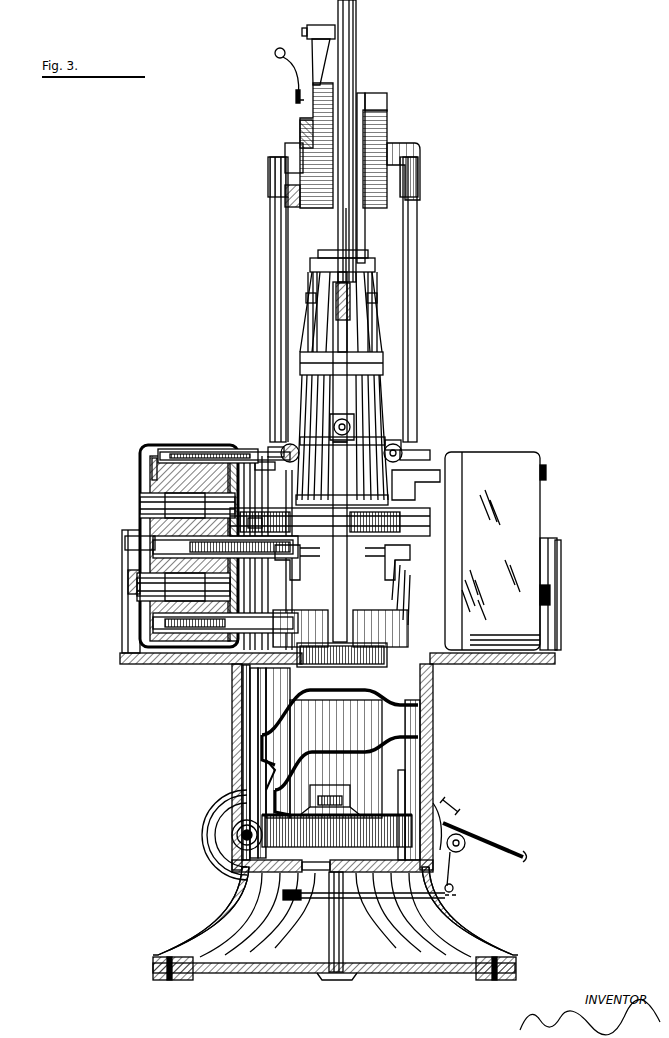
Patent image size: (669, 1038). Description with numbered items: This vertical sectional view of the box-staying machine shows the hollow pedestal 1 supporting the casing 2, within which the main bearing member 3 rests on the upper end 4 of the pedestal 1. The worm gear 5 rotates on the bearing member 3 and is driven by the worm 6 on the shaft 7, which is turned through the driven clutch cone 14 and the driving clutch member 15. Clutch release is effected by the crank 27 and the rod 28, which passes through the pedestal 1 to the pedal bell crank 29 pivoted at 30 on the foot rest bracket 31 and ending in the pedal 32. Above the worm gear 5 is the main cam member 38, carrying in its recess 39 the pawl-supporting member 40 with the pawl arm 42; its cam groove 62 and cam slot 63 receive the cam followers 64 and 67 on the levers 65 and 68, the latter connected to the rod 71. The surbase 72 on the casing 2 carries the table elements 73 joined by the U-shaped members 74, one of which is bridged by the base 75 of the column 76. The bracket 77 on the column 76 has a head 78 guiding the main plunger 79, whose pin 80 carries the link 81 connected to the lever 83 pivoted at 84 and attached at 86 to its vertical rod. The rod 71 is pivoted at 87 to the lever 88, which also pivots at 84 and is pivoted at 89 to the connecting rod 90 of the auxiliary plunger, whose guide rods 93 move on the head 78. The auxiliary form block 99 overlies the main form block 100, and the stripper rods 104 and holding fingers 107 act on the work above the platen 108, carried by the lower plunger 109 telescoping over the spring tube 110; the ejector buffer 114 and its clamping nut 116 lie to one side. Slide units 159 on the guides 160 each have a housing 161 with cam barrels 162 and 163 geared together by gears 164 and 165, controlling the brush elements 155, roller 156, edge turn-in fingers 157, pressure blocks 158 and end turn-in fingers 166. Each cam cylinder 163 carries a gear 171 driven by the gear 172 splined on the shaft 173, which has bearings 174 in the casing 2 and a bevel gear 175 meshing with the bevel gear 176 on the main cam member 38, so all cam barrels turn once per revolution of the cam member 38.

The pedestal 1 is at (192, 950).
The casing 2 is at (334, 1036).
The main bearing member 3 is at (262, 849).
The upper end of pedestal 4 is at (278, 873).
The worm gear 5 is at (435, 800).
The worm 6 is at (215, 820).
The shaft 7 is at (242, 843).
The driven clutch cone 14 is at (205, 807).
The driving clutch member 15 is at (232, 835).
The crank 27 is at (240, 892).
The rod 28 is at (358, 900).
The pedal bell crank 29 is at (458, 872).
The pivot 30 is at (470, 833).
The foot rest bracket 31 is at (512, 857).
The pedal 32 is at (458, 808).
The main cam member 38 is at (395, 770).
The recess 39 is at (355, 795).
The pawl-supporting member 40 is at (425, 782).
The arm 42 is at (339, 783).
The cam groove 62 is at (349, 761).
The cam slot 63 is at (339, 700).
The cam follower 64 is at (272, 222).
The lever 65 is at (257, 780).
The cam follower 67 is at (257, 740).
The lever 68 is at (250, 720).
The rod 71 is at (418, 283).
The surbase 72 is at (132, 664).
The table elements 73 is at (125, 533).
The U-shaped members 74 is at (125, 582).
The base 75 is at (252, 512).
The column 76 is at (378, 385).
The bracket 77 is at (315, 262).
The head 78 is at (353, 232).
The main plunger 79 is at (356, 19).
The pin 80 is at (305, 31).
The link 81 is at (312, 47).
The lever 83 is at (300, 127).
The pivot 84 is at (272, 197).
The pivotal attachment 86 is at (287, 152).
The pivot 87 is at (420, 152).
The lever 88 is at (386, 128).
The pivot 89 is at (386, 102).
The connecting rod 90 is at (382, 135).
The guide rods 93 is at (352, 50).
The auxiliary form block 99 is at (388, 355).
The main form block 100 is at (388, 368).
The stripper rods 104 is at (305, 311).
The holding fingers 107 is at (350, 336).
The platen 108 is at (387, 440).
The lower plunger 109 is at (338, 432).
The spring tube 110 is at (328, 937).
The buffer 114 is at (352, 422).
The nut 116 is at (333, 418).
The brush elements 155 is at (288, 444).
The roller 156 is at (276, 447).
The top edge turn-in fingers 157 is at (342, 564).
The pressure blocks 158 is at (362, 569).
The slide units 159 is at (145, 492).
The guides 160 is at (127, 540).
The housing 161 is at (192, 452).
The cam barrel 162 is at (215, 485).
The cam cylinder 163 is at (140, 605).
The gear 164 is at (147, 625).
The gear 165 is at (153, 465).
The end turn-in fingers 166 is at (265, 463).
The gear 171 is at (162, 664).
The gear 172 is at (185, 664).
The shaft 173 is at (208, 664).
The bearings 174 is at (228, 664).
The bevel gears 175 is at (340, 629).
The bevel gear 176 is at (240, 692).